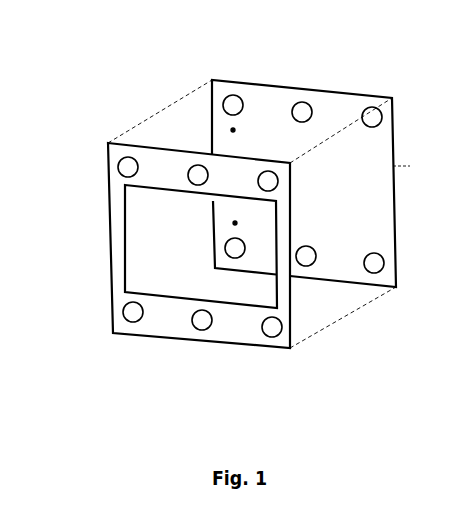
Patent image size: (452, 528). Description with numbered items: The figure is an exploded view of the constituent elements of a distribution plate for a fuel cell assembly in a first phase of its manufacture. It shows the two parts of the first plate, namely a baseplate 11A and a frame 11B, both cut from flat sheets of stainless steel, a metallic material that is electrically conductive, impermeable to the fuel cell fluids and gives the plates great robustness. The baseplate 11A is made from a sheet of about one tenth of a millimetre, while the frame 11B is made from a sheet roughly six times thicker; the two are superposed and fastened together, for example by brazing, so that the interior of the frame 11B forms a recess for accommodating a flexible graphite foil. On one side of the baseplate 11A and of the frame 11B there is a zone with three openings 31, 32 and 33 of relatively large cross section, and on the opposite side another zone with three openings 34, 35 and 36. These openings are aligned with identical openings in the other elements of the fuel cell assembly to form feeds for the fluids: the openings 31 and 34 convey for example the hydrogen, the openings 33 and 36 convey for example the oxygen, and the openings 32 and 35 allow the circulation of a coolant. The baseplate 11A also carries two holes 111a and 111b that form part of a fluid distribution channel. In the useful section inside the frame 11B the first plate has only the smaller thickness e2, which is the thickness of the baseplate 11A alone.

The baseplate 11A is at (359, 200).
The frame 11B is at (286, 340).
The opening 31 is at (128, 167).
The opening 32 is at (198, 175).
The opening 33 is at (268, 181).
The opening 34 is at (235, 248).
The opening 35 is at (202, 320).
The opening 36 is at (272, 327).
The hole 111a is at (233, 130).
The hole 111b is at (235, 223).
The thickness e2 is at (407, 177).